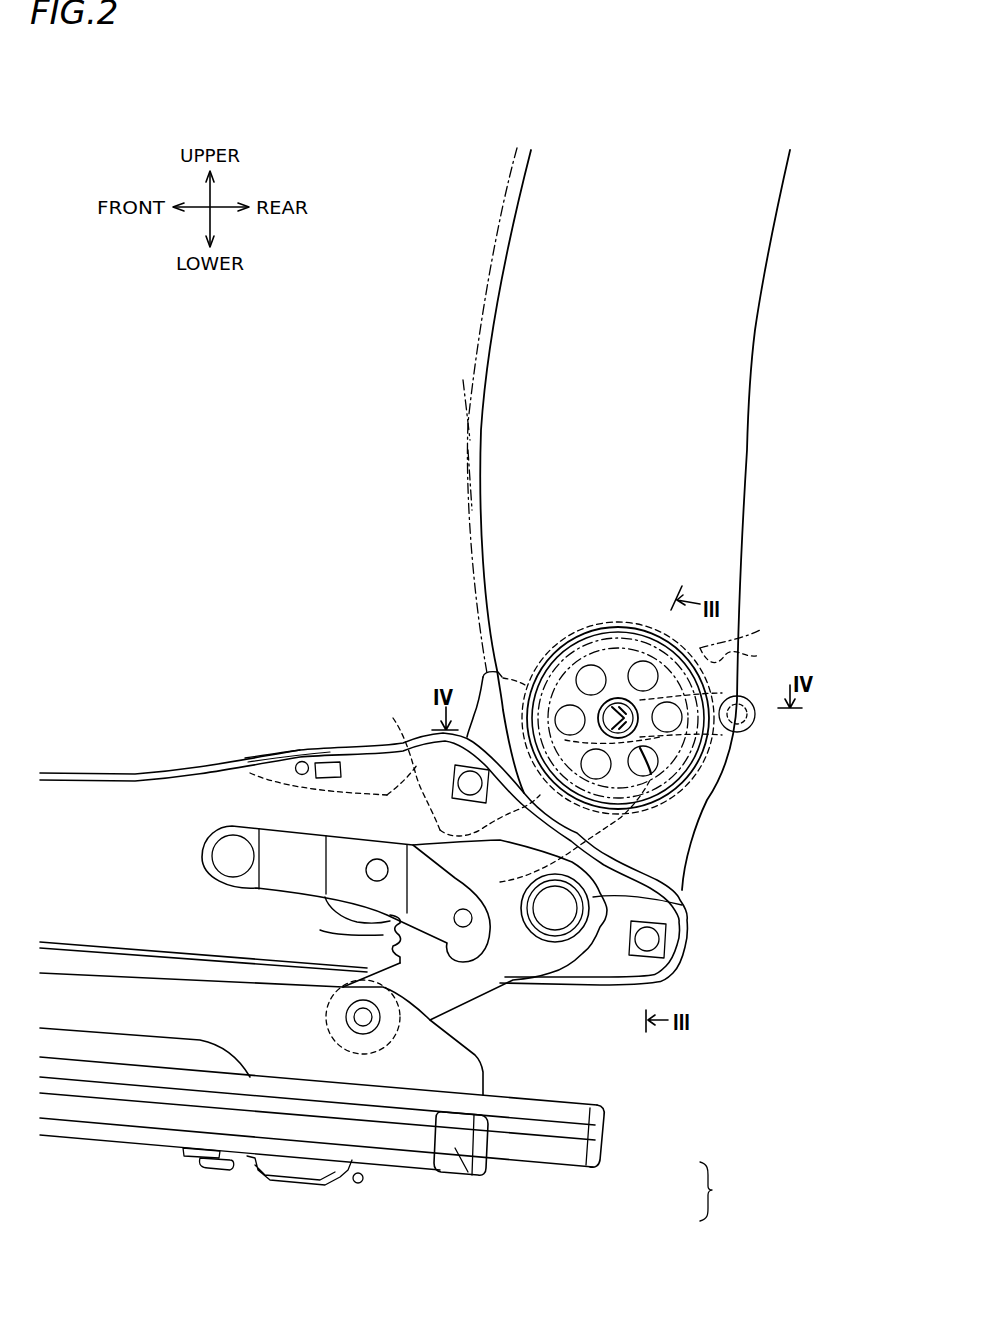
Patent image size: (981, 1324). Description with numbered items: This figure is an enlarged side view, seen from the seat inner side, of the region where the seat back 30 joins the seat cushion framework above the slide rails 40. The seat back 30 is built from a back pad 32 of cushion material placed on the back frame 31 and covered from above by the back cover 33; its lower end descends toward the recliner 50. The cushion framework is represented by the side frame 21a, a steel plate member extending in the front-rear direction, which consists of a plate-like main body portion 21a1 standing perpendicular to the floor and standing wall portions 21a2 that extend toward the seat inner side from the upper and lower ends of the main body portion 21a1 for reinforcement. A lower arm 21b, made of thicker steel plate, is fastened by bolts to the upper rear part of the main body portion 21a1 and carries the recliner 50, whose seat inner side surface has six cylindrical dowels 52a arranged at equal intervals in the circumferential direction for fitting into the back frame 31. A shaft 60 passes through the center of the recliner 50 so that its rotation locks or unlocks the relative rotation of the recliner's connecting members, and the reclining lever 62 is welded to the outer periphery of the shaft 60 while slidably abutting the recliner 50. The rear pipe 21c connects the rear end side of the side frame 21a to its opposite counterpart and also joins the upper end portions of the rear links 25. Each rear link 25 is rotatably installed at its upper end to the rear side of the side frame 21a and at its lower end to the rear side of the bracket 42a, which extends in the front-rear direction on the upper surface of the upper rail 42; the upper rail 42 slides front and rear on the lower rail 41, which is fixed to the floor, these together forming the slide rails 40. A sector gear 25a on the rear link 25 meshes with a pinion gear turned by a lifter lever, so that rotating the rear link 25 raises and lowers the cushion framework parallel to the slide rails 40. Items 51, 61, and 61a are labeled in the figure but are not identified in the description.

The side frame 21a is at (77, 773).
The main body portion 21a1 is at (140, 800).
The standing wall portions 21a2 is at (192, 770).
The lower arm 21b is at (473, 690).
The rear pipe 21c is at (688, 917).
The rear link 25 is at (468, 1000).
The sector gear 25a is at (340, 934).
The seat back 30 is at (474, 312).
The back frame 31 is at (517, 551).
The back pad 32 is at (470, 479).
The back cover 33 is at (468, 410).
The slide rails 40 is at (720, 1191).
The lower rails 41 is at (478, 1173).
The upper rails 42 is at (598, 1137).
The brackets 42a is at (486, 1078).
The recliner 50 is at (537, 672).
The reclining cover 51 is at (760, 630).
The dowels 52a is at (590, 667).
The shaft 60 is at (665, 745).
The lever arm 61 is at (705, 680).
The lever pivot shaft 61a is at (619, 700).
The reclining lever 62 is at (450, 790).